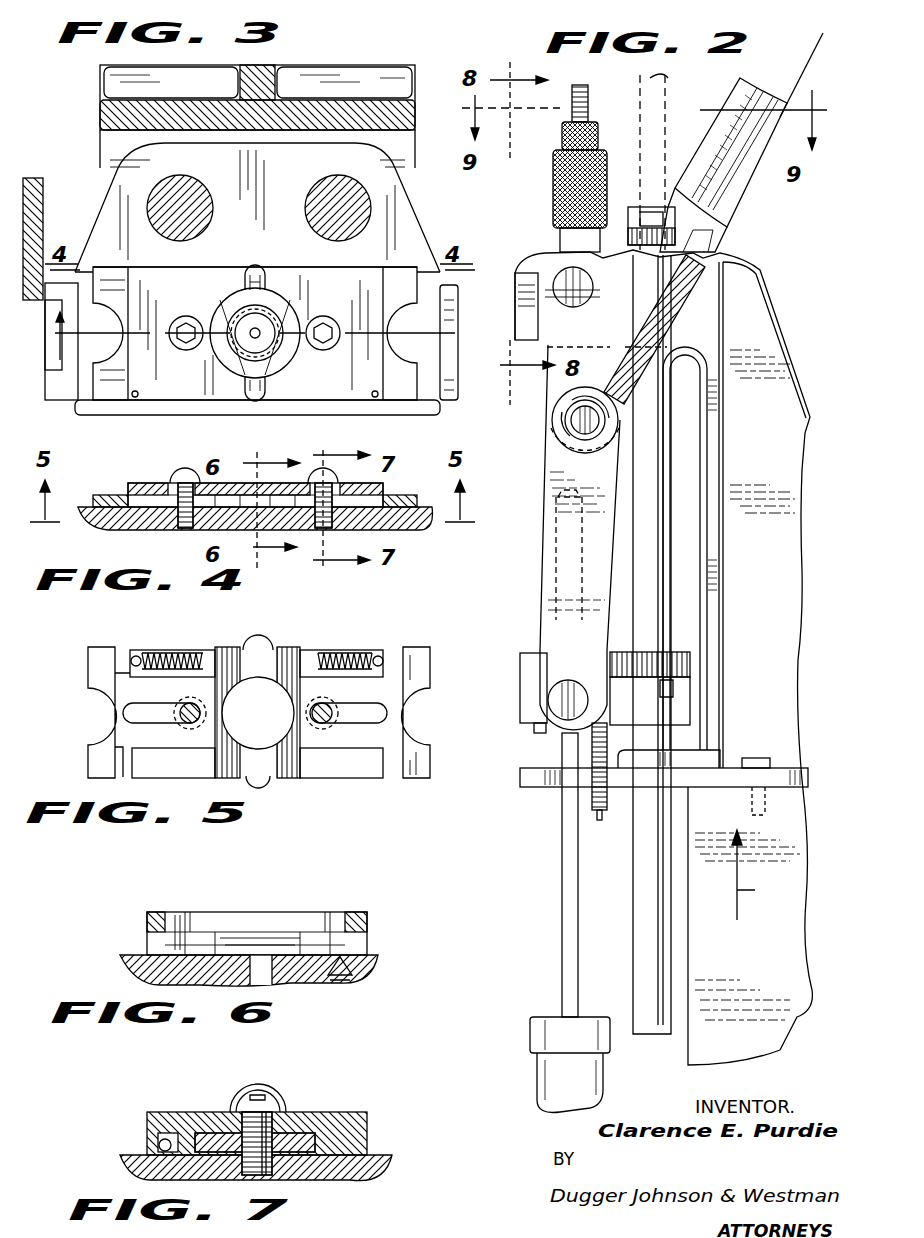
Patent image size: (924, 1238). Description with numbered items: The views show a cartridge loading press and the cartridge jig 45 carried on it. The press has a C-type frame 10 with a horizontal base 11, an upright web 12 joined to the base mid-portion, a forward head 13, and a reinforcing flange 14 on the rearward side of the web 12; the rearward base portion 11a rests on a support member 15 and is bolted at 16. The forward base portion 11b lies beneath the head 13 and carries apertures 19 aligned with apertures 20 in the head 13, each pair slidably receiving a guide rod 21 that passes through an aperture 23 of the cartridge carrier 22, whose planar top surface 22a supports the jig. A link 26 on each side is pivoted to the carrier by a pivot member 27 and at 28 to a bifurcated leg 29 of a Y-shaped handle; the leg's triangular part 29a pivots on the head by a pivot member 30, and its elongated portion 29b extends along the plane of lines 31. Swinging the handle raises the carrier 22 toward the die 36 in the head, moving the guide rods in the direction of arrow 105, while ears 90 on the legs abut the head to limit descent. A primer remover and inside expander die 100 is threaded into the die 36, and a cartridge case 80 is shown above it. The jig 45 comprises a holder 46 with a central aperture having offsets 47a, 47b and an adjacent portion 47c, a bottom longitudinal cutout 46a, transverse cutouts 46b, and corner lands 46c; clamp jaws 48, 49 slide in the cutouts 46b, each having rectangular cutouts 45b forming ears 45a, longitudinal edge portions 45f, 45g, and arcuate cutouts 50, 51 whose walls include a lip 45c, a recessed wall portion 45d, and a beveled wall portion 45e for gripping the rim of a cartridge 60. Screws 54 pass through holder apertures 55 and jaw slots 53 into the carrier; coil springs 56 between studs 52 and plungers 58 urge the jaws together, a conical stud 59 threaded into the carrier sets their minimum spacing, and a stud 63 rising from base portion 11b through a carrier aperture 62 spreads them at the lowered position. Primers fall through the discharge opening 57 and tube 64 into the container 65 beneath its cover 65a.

In FIG. 2, the C-type frame 10 is at (790, 318).
In FIG. 2, the base 11 is at (785, 788).
In FIG. 3, the rearward base portion 11a is at (388, 48).
In FIG. 2, the rearward base portion 11a is at (800, 765).
In FIG. 2, the forward base portion 11b is at (530, 790).
In FIG. 3, the upright web 12 is at (338, 115).
In FIG. 2, the upright web 12 is at (720, 532).
In FIG. 2, the head 13 is at (525, 282).
In FIG. 3, the housing wall 14 is at (258, 82).
In FIG. 2, the housing wall 14 is at (785, 592).
In FIG. 2, the support member 15 is at (775, 1052).
In FIG. 2, the bolt 16 is at (762, 758).
In FIG. 2, the base apertures 19 is at (672, 770).
In FIG. 2, the head apertures 20 is at (640, 308).
In FIG. 2, the guide rod 21 is at (665, 928).
In FIG. 7, the cartridge carrier 22 is at (390, 1175).
In FIG. 2, the cartridge carrier 22 is at (680, 703).
In FIG. 3, the carrier top surface 22a is at (305, 182).
In FIG. 7, the carrier top surface 22a is at (395, 1156).
In FIG. 2, the carrier top surface 22a is at (690, 658).
In FIG. 3, the carrier aperture 23 is at (212, 212).
In FIG. 2, the carrier aperture 23 is at (690, 683).
In FIG. 3, the link 26 is at (33, 180).
In FIG. 2, the link 26 is at (602, 558).
In FIG. 2, the pivot member 27 is at (560, 698).
In FIG. 2, the pivotal connection 28 is at (578, 425).
In FIG. 3, the bifurcated leg 29 is at (182, 162).
In FIG. 2, the triangular part 29a is at (620, 348).
In FIG. 2, the elongated leg portion 29b is at (735, 198).
In FIG. 2, the pivot member 30 is at (580, 287).
In FIG. 2, the plane of handle 31 is at (805, 72).
In FIG. 2, the die 36 is at (636, 122).
In FIG. 3, the jig 45 is at (158, 380).
In FIG. 4, the jig 45 is at (255, 495).
In FIG. 5, the jig 45 is at (238, 716).
In FIG. 7, the jig 45 is at (271, 1103).
In FIG. 2, the jig 45 is at (528, 648).
In FIG. 5, the ear 45a is at (98, 645).
In FIG. 5, the jaw cutout 45b is at (125, 765).
In FIG. 6, the lip 45c is at (295, 950).
In FIG. 6, the recessed wall portion 45d is at (300, 985).
In FIG. 3, the beveled wall portion 45e is at (235, 318).
In FIG. 6, the beveled wall portion 45e is at (210, 940).
In FIG. 5, the longitudinal edge portion 45f is at (95, 668).
In FIG. 5, the longitudinal edge portion 45g is at (285, 655).
In FIG. 3, the holder 46 is at (360, 275).
In FIG. 5, the holder 46 is at (175, 652).
In FIG. 5, the longitudinal cutout 46a is at (300, 778).
In FIG. 5, the transverse cutout 46b is at (330, 755).
In FIG. 7, the transverse cutout 46b is at (205, 1125).
In FIG. 5, the corner land 46c is at (385, 778).
In FIG. 3, the aperture offset 47a is at (250, 380).
In FIG. 5, the aperture offset 47a is at (268, 652).
In FIG. 5, the aperture offset 47b is at (258, 778).
In FIG. 6, the hub flange 47c is at (358, 922).
In FIG. 3, the clamp jaw 48 is at (412, 412).
In FIG. 5, the clamp jaw 48 is at (418, 760).
In FIG. 6, the clamp jaw 48 is at (368, 948).
In FIG. 7, the clamp jaw 48 is at (320, 1110).
In FIG. 3, the clamp jaw 49 is at (118, 255).
In FIG. 5, the clamp jaw 49 is at (96, 762).
In FIG. 3, the arcuate cutout 50 is at (268, 318).
In FIG. 5, the arcuate cutout 50 is at (230, 713).
In FIG. 3, the arcuate cutout 51 is at (438, 400).
In FIG. 4, the arcuate cutout 51 is at (105, 497).
In FIG. 5, the arcuate cutout 51 is at (98, 718).
In FIG. 5, the stud 52 is at (140, 652).
In FIG. 7, the stud 52 is at (160, 1112).
In FIG. 5, the slot 53 is at (145, 710).
In FIG. 7, the slot 53 is at (272, 1165).
In FIG. 3, the screw 54 is at (340, 322).
In FIG. 4, the screw 54 is at (183, 478).
In FIG. 5, the screw 54 is at (332, 708).
In FIG. 7, the screw 54 is at (275, 1090).
In FIG. 4, the holder aperture 55 is at (165, 525).
In FIG. 7, the holder aperture 55 is at (280, 1130).
In FIG. 5, the coil spring 56 is at (155, 652).
In FIG. 7, the coil spring 56 is at (158, 1140).
In FIG. 6, the primer discharge opening 57 is at (272, 955).
In FIG. 5, the plunger 58 is at (312, 652).
In FIG. 6, the plunger 58 is at (372, 968).
In FIG. 3, the threaded stud 59 is at (265, 388).
In FIG. 6, the threaded stud 59 is at (345, 978).
In FIG. 2, the threaded stud 59 is at (540, 736).
In FIG. 2, the cartridge 60 is at (554, 546).
In FIG. 6, the carrier aperture 62 is at (160, 970).
In FIG. 3, the threaded stud 63 is at (262, 270).
In FIG. 6, the threaded stud 63 is at (178, 905).
In FIG. 2, the threaded stud 63 is at (600, 812).
In FIG. 2, the primer discharge tube 64 is at (565, 895).
In FIG. 2, the container 65 is at (540, 1083).
In FIG. 2, the cover 65a is at (538, 1042).
In FIG. 2, the cartridge case 80 is at (655, 100).
In FIG. 2, the ear 90 is at (710, 242).
In FIG. 2, the primer remover and inside expander die 100 is at (612, 70).
In FIG. 2, the arrow 105 is at (761, 875).